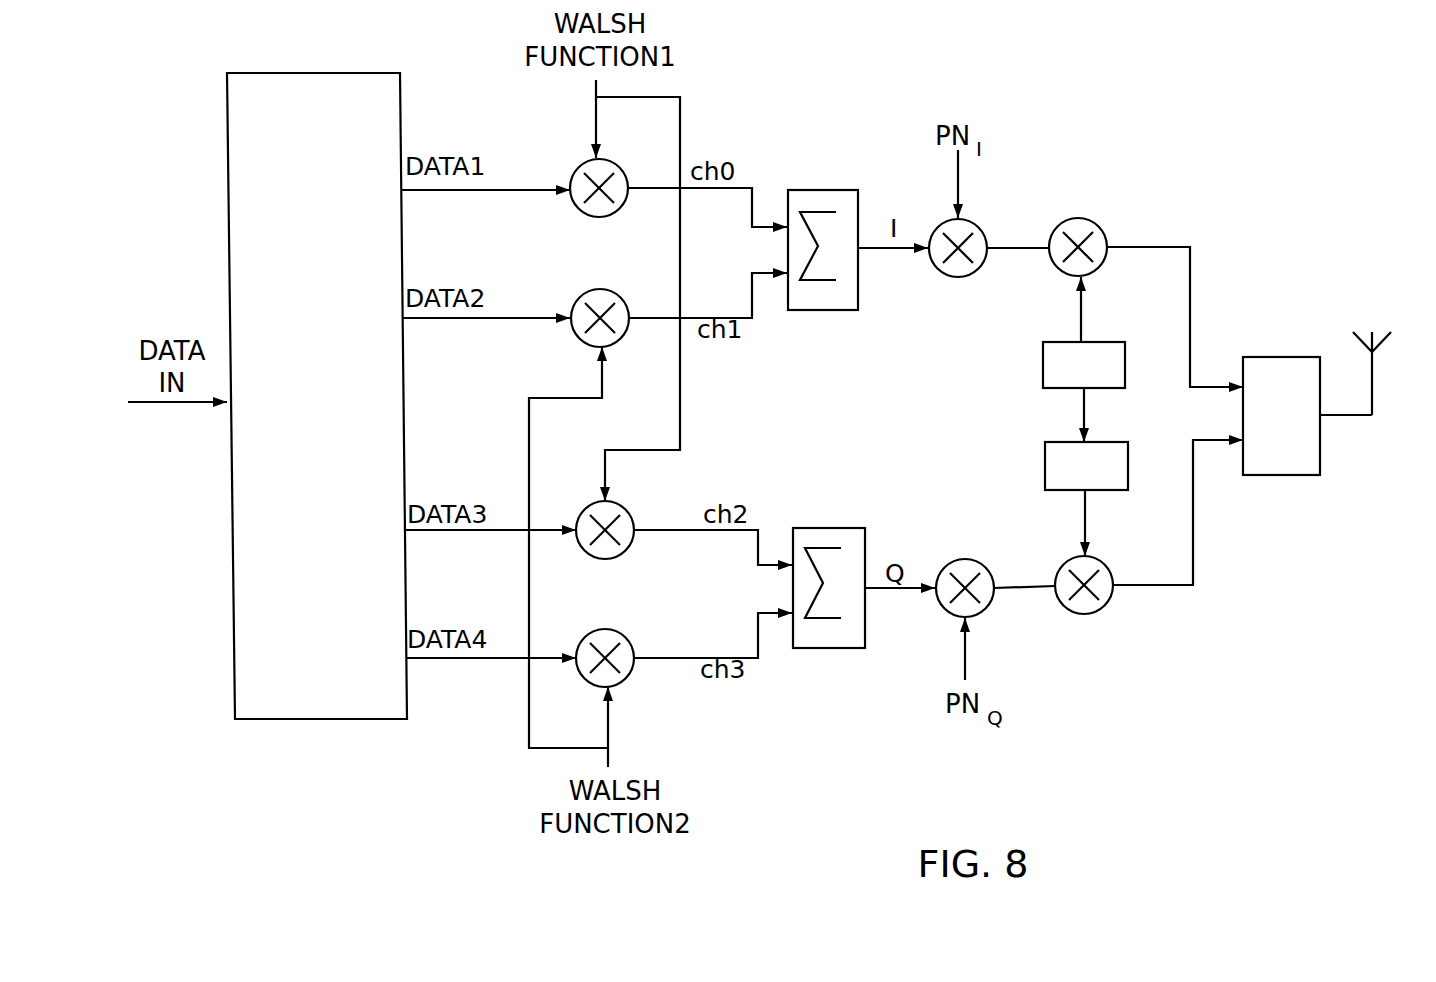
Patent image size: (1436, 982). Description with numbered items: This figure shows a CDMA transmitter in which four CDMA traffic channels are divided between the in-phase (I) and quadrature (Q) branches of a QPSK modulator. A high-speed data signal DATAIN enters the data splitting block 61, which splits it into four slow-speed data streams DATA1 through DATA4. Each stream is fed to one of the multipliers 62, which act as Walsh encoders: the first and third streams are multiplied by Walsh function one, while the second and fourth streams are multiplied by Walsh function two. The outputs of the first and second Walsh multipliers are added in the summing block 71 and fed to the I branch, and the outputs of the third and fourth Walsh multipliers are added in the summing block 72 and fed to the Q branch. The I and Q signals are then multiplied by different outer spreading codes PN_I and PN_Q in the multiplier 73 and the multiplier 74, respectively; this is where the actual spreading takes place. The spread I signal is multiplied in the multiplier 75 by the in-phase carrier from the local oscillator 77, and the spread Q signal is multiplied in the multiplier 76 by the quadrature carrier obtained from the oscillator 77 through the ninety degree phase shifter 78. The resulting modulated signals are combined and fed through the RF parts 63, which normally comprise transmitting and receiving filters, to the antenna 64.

The data splitting block 61 is at (310, 73).
The multipliers (Walsh encoders) 62 is at (648, 692).
The RF parts 63 is at (1288, 357).
The antenna 64 is at (1372, 405).
The summing block 71 is at (818, 190).
The summing block 72 is at (835, 528).
The multiplier 73 is at (968, 280).
The multiplier 74 is at (968, 558).
The multiplier 75 is at (1078, 217).
The multiplier 76 is at (1084, 614).
The local oscillator 77 is at (1043, 372).
The 90 degree phase shifter 78 is at (1045, 462).